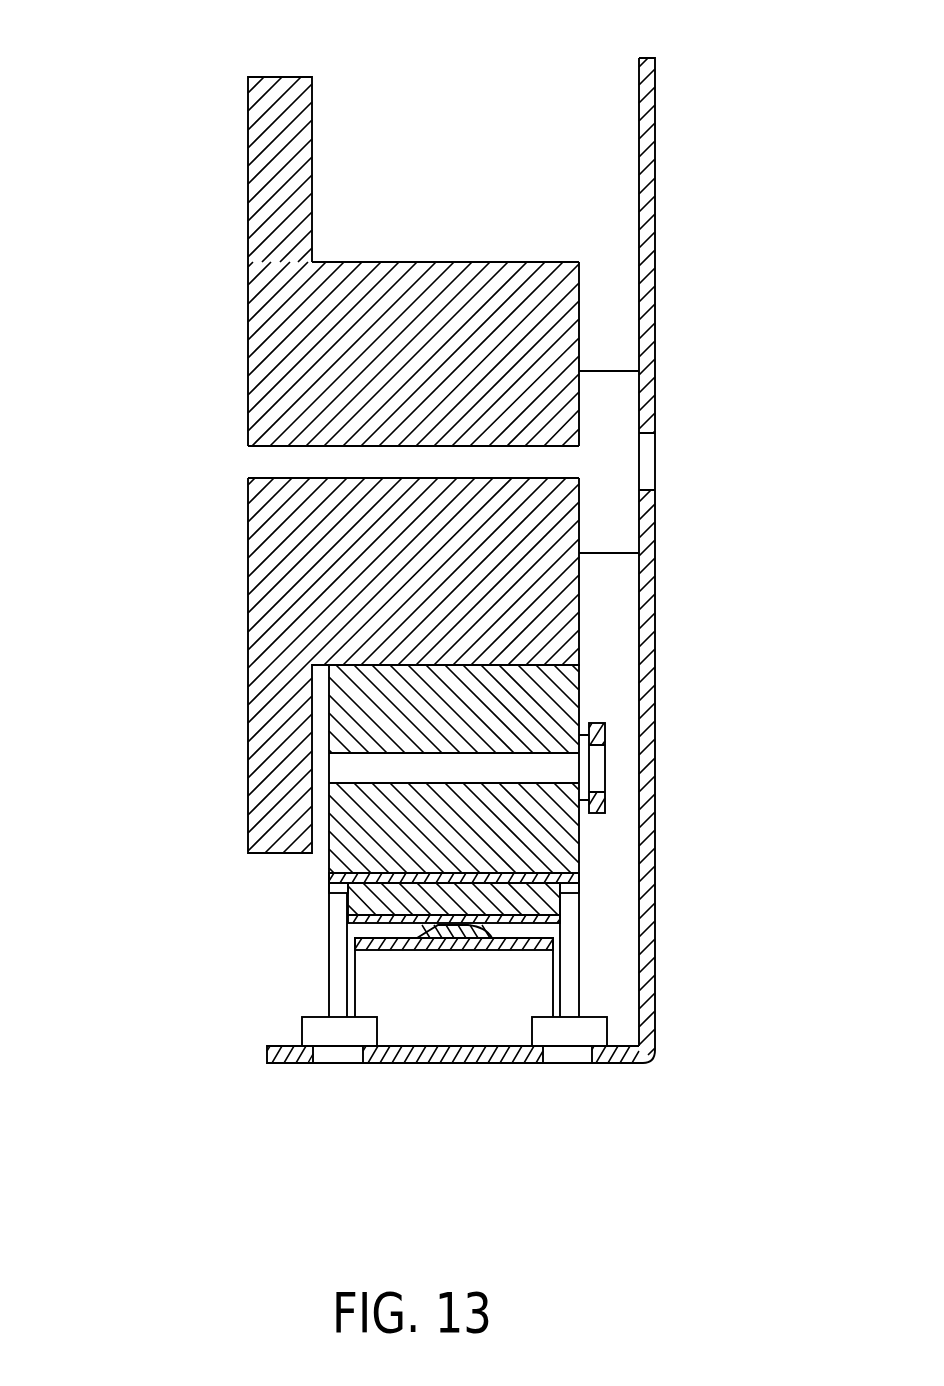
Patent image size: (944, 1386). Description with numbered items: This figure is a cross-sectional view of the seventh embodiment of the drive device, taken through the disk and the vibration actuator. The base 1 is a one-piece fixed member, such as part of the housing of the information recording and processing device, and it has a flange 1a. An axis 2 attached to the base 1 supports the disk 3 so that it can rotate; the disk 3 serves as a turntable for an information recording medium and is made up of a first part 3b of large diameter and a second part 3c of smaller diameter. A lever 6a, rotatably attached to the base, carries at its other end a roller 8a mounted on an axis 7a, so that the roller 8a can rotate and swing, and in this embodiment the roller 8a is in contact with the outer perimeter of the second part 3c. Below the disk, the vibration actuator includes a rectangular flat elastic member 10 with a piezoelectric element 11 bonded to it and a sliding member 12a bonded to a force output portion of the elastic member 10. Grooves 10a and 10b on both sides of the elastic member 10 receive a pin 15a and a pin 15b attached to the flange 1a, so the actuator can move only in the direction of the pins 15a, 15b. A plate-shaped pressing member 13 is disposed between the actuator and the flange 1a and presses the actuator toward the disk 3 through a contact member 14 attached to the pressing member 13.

The base 1 is at (647, 102).
The flange of base 1a is at (433, 1063).
The axis 2 is at (318, 467).
The disk 3 is at (355, 348).
The first part of disk 3b is at (278, 76).
The second part of disk 3c is at (373, 260).
The lever 6a is at (597, 732).
The axis 7a is at (545, 770).
The roller 8a is at (354, 710).
The elastic member 10 is at (392, 904).
The groove 10a is at (345, 892).
The groove 10b is at (570, 890).
The piezoelectric element 11 is at (558, 918).
The sliding member 12a is at (330, 880).
The pressing member 13 is at (365, 988).
The contact member 14 is at (435, 932).
The pin 15a is at (337, 1032).
The pin 15b is at (567, 1033).